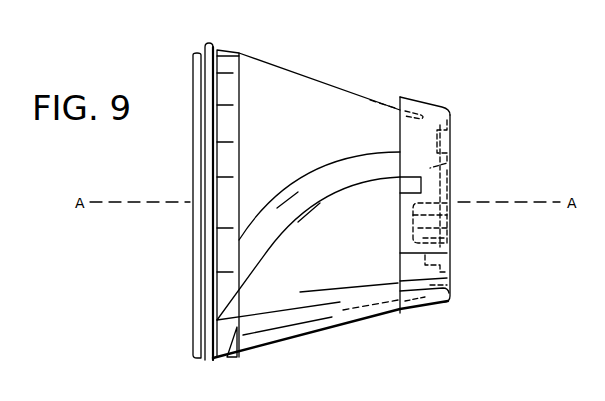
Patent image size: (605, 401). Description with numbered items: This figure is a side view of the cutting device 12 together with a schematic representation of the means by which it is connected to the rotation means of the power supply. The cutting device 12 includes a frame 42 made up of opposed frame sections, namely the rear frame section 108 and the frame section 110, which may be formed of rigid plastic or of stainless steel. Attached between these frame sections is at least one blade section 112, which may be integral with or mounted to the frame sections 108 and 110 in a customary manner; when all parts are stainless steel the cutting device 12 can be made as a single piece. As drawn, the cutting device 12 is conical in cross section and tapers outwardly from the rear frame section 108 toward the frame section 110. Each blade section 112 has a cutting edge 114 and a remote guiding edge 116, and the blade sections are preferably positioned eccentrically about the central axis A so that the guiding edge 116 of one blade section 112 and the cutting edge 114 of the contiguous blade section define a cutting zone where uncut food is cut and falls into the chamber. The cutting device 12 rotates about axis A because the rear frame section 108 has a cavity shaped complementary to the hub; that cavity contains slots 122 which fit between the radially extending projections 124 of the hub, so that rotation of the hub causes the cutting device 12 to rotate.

The cutting device 12 is at (295, 72).
The frame 42 is at (418, 95).
The rear frame section 108 is at (440, 112).
The frame section 110 is at (222, 50).
The blade section 112 is at (312, 98).
The cutting edge 114 is at (336, 200).
The guiding edge 116 is at (346, 166).
The slots 122 is at (448, 232).
The radially extending projections 124 is at (448, 210).